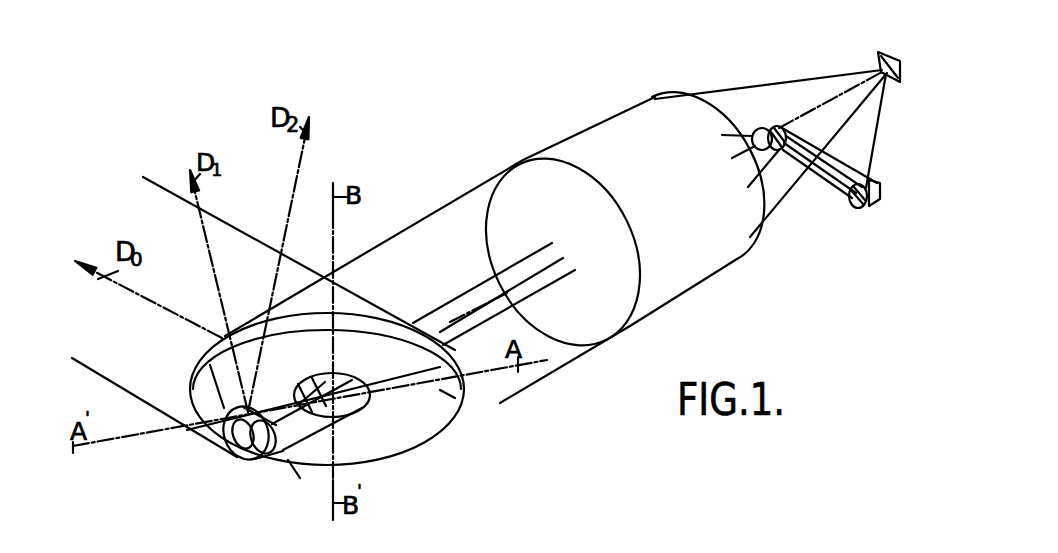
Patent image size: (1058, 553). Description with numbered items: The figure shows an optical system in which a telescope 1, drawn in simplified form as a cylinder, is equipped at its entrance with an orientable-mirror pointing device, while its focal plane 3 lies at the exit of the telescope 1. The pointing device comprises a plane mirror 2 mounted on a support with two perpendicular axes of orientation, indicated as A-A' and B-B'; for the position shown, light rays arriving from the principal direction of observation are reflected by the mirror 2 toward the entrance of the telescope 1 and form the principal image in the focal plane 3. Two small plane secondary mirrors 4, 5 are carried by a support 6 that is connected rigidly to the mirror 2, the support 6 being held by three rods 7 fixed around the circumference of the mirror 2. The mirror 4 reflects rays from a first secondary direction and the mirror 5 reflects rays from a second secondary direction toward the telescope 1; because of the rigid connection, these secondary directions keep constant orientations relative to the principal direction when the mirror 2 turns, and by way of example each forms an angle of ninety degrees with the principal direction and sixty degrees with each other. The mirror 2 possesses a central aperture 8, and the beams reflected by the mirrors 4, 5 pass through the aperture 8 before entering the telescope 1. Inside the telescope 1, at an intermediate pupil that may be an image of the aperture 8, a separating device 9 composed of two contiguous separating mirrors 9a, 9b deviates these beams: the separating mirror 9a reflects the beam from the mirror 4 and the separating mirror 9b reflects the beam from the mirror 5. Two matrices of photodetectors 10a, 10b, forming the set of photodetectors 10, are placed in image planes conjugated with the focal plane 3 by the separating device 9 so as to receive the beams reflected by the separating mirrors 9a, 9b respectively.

The telescope 1 is at (590, 125).
The plane mirror 2 is at (420, 447).
The focal plane 3 is at (900, 84).
The secondary mirror 4 is at (228, 438).
The secondary mirror 5 is at (246, 450).
The support 6 is at (285, 455).
The rods 7 is at (215, 395).
The central aperture 8 is at (348, 374).
The separating device 9 is at (799, 99).
The separating mirror 9a is at (760, 128).
The separating mirror 9b is at (781, 127).
The set of photodetectors 10 is at (863, 235).
The matrix of photodetectors 10a is at (852, 208).
The matrix of photodetectors 10b is at (894, 217).